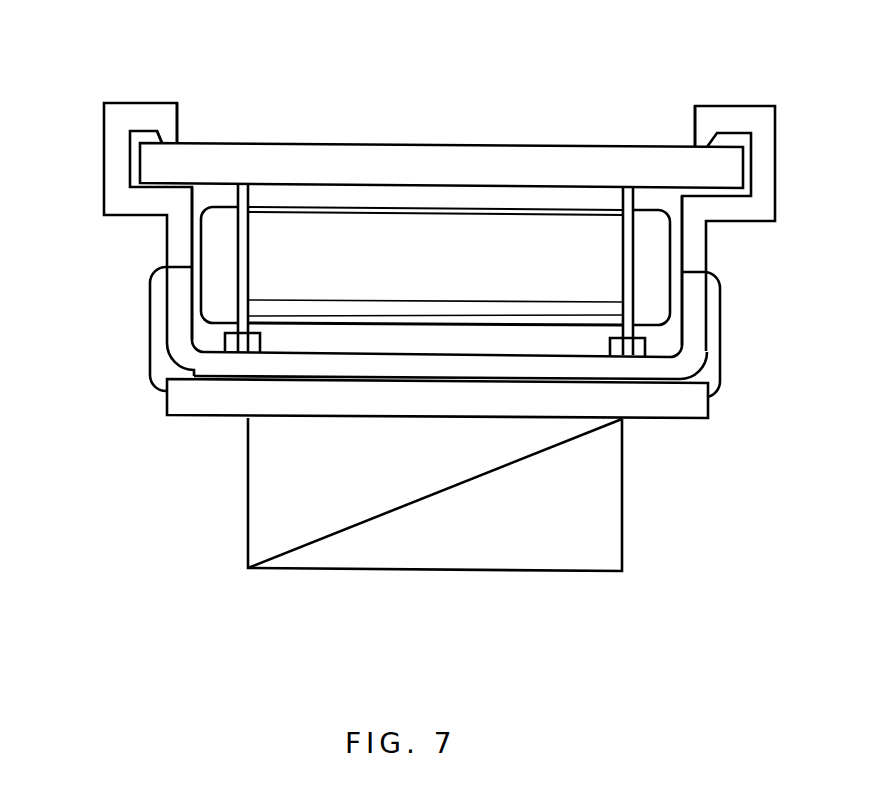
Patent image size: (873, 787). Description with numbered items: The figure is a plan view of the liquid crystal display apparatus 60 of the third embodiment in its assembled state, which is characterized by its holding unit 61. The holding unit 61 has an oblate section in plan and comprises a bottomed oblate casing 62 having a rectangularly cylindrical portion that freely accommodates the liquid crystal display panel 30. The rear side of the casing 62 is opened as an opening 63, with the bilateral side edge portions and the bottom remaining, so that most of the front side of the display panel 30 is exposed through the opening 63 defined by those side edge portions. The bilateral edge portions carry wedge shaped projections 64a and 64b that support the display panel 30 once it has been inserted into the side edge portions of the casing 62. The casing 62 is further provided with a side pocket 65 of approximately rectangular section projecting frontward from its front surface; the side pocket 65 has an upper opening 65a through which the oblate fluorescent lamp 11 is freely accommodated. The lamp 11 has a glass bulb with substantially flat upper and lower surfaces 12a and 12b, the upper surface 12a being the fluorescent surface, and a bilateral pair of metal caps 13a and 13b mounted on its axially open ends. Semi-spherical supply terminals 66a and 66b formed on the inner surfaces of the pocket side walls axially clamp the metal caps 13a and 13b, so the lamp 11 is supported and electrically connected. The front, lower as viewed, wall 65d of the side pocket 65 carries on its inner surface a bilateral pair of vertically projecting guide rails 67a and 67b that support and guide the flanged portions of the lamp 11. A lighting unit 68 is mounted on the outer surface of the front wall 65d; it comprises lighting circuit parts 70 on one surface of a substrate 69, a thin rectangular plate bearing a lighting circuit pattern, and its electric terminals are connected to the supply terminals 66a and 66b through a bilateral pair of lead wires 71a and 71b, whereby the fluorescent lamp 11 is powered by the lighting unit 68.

The liquid crystal display apparatus 60 is at (102, 117).
The holding unit 61 is at (122, 227).
The casing 62 is at (115, 170).
The opening 63 is at (182, 125).
The wedge shaped projection 64a is at (168, 133).
The wedge shaped projection 64b is at (703, 140).
The liquid crystal display panel 30 is at (565, 168).
The oblate fluorescent lamp 11 is at (396, 197).
The upper surface of glass bulb 12a is at (487, 217).
The lower surface of glass bulb 12b is at (497, 327).
The metal cap 13a is at (223, 222).
The metal cap 13b is at (648, 223).
The side pocket 65 is at (175, 343).
The upper opening 65a is at (373, 340).
The front wall 65d is at (613, 368).
The supply terminal 66a is at (186, 263).
The supply terminal 66b is at (686, 262).
The guide rail 67a is at (150, 377).
The guide rail 67b is at (645, 347).
The substrate 69 is at (217, 407).
The lighting circuit parts 70 is at (535, 542).
The lighting unit 68 is at (236, 566).
The lead wire 71a is at (150, 312).
The lead wire 71b is at (722, 317).